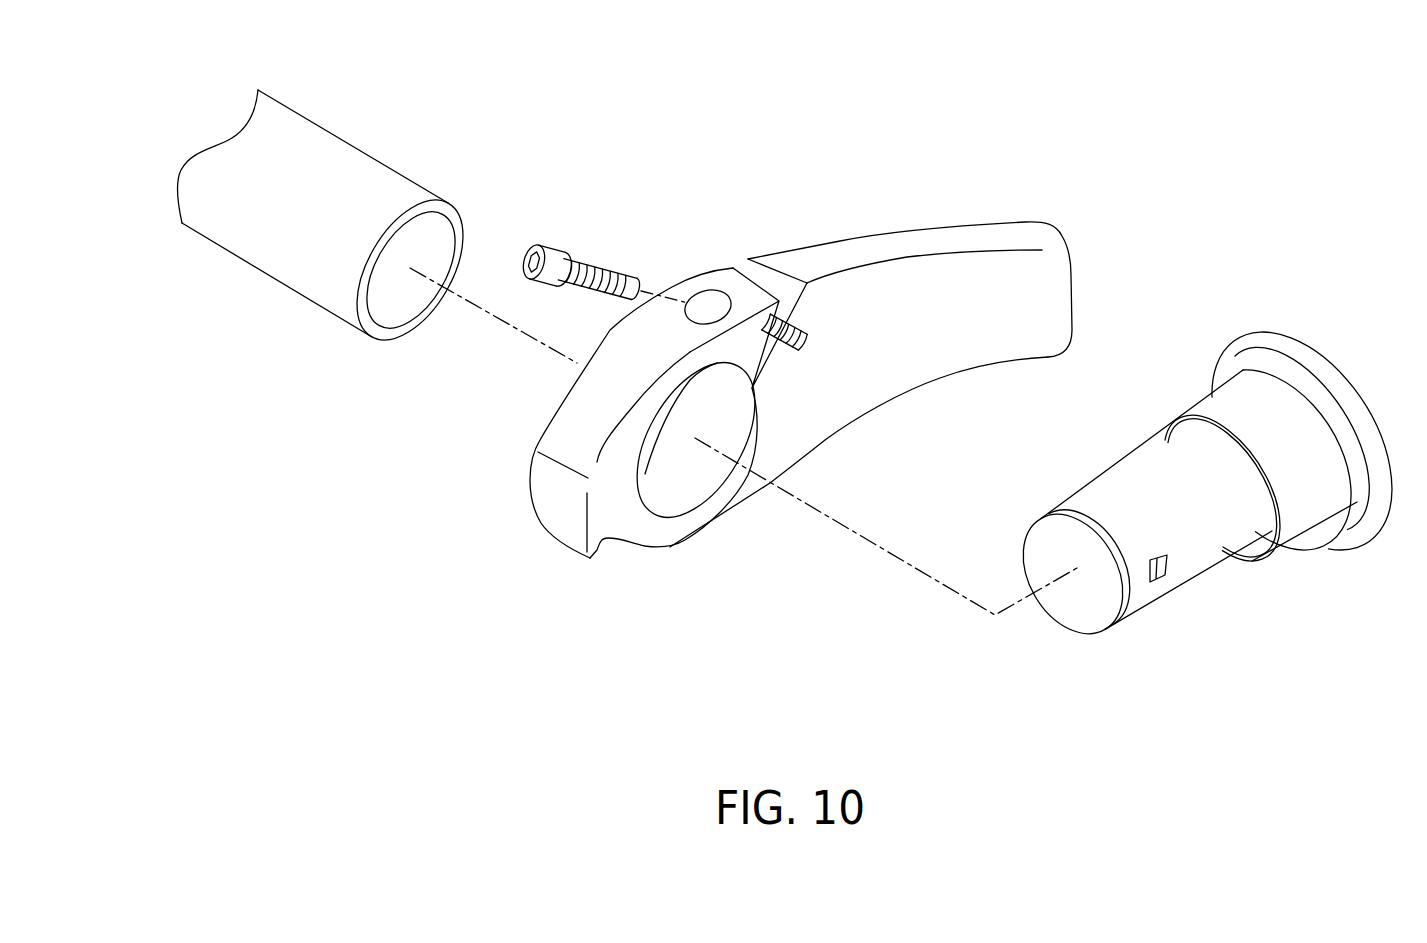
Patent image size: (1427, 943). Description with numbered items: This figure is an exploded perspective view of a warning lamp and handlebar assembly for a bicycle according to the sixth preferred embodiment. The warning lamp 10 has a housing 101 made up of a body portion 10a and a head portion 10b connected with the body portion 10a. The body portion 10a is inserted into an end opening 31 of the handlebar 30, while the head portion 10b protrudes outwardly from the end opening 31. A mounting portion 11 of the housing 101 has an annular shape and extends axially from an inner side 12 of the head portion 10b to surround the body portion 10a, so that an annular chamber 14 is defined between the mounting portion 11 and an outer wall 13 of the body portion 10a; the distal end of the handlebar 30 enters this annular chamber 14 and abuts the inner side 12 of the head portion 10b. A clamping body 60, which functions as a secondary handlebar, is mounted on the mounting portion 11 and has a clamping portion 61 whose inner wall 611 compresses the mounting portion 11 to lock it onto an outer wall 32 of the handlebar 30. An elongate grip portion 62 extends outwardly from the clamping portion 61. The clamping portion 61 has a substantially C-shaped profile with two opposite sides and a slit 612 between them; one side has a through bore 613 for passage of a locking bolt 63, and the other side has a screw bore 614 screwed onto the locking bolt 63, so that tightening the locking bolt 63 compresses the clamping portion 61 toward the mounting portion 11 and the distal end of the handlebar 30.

The warning lamp 10 is at (1156, 330).
The body portion 10a is at (1188, 558).
The head portion 10b is at (1347, 530).
The housing 101 is at (1168, 677).
The mounting portion 11 is at (1240, 403).
The inner side 12 is at (1320, 395).
The outer wall 13 is at (1110, 493).
The annular chamber 14 is at (1184, 427).
The handlebar 30 is at (349, 104).
The end opening 31 is at (390, 313).
The outer wall 32 is at (373, 180).
The clamping body 60 is at (785, 203).
The clamping portion 61 is at (597, 407).
The inner wall 611 is at (688, 488).
The slit 612 is at (758, 276).
The through bore 613 is at (710, 303).
The screw bore 614 is at (803, 325).
The grip portion 62 is at (942, 240).
The locking bolt 63 is at (578, 263).